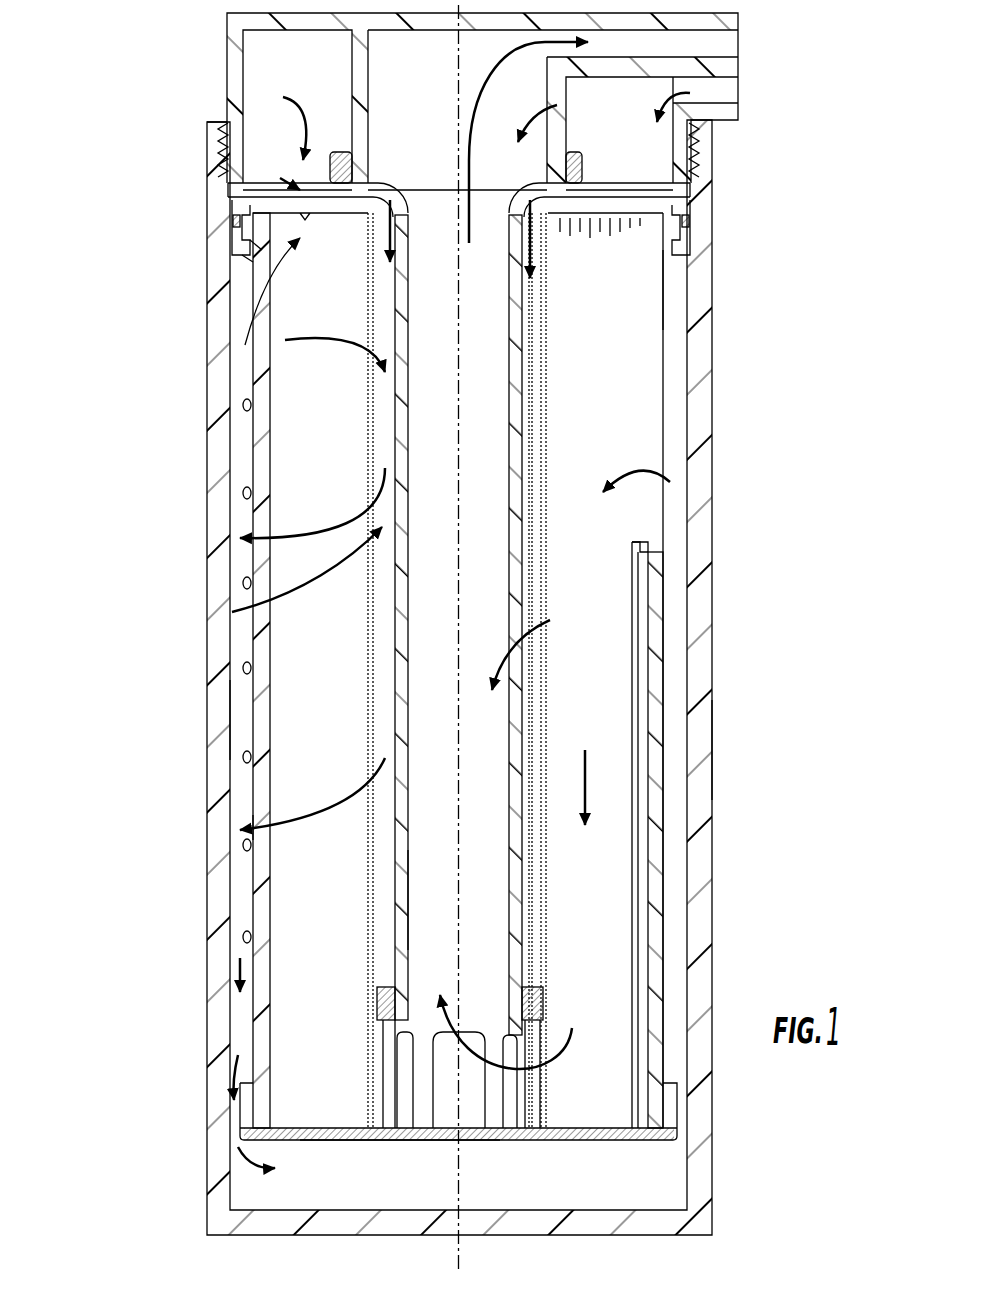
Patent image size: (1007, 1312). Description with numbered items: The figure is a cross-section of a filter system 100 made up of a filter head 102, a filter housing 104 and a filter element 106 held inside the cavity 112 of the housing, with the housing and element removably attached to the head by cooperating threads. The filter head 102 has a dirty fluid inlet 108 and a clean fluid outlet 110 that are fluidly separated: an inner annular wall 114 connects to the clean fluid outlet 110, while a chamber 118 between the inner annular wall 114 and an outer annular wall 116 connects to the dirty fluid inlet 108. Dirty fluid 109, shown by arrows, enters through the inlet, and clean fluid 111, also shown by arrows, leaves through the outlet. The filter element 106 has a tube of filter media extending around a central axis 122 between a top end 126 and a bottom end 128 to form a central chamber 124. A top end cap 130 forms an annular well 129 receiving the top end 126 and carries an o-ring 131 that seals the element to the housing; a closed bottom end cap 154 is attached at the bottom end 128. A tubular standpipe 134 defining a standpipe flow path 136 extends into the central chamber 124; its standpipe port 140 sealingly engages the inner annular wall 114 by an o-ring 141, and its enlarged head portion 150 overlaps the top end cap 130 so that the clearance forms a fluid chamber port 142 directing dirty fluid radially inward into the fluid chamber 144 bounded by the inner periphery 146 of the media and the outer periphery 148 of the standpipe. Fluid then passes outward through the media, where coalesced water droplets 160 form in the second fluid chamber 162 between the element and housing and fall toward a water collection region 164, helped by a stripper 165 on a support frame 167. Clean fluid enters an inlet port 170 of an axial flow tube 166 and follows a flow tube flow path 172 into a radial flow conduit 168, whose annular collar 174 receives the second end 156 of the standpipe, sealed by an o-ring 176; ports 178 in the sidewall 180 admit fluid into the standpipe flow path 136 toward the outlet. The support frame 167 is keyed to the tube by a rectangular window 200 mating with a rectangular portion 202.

The filter system 100 is at (128, 220).
The filter head 102 is at (178, 68).
The filter housing 104 is at (700, 395).
The filter element 106 is at (672, 290).
The dirty fluid inlet 108 is at (725, 92).
The dirty fluid 109 is at (700, 165).
The clean fluid outlet 110 is at (724, 44).
The clean fluid 111 is at (495, 75).
The cavity 112 is at (700, 745).
The inner annular wall 114 is at (355, 120).
The outer annular wall 116 is at (705, 186).
The chamber 118 is at (258, 150).
The central axis 122 is at (460, 850).
The central chamber 124 is at (272, 355).
The top end 126 is at (700, 205).
The bottom end 128 is at (660, 1133).
The annular well 129 is at (262, 318).
The top end cap 130 is at (242, 242).
The o-ring 131 is at (232, 212).
The standpipe 134 is at (515, 740).
The standpipe flow path 136 is at (545, 630).
The standpipe port 140 is at (545, 130).
The o-ring 141 is at (578, 165).
The fluid chamber port 142 is at (280, 180).
The fluid chamber 144 is at (268, 606).
The inner periphery 146 is at (372, 410).
The outer periphery 148 is at (392, 455).
The enlarged head portion 150 is at (330, 172).
The bottom end cap 154 is at (395, 1145).
The second end 156 is at (500, 1130).
The droplets 160 is at (243, 405).
The second fluid chamber 162 is at (244, 716).
The water collection region 164 is at (260, 1185).
The stripper 165 is at (240, 835).
The axial flow tube 166 is at (620, 360).
The support frame 167 is at (243, 822).
The radial flow conduit 168 is at (385, 1110).
The inlet port 170 is at (672, 472).
The flow tube flow path 172 is at (605, 958).
The annular collar 174 is at (380, 1040).
The o-ring 176 is at (385, 990).
The ports 178 is at (388, 1066).
The sidewall 180 is at (400, 890).
The rectangular window 200 is at (660, 560).
The rectangular portion 202 is at (655, 542).